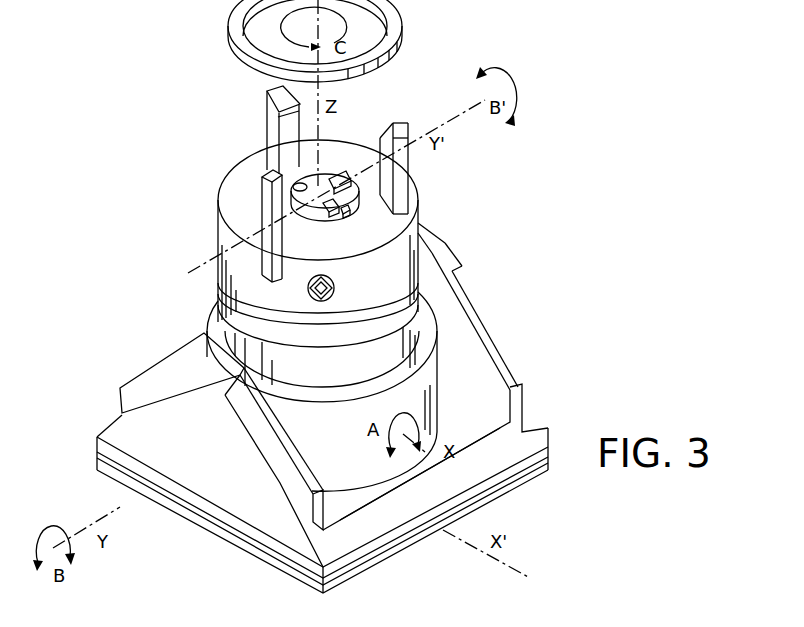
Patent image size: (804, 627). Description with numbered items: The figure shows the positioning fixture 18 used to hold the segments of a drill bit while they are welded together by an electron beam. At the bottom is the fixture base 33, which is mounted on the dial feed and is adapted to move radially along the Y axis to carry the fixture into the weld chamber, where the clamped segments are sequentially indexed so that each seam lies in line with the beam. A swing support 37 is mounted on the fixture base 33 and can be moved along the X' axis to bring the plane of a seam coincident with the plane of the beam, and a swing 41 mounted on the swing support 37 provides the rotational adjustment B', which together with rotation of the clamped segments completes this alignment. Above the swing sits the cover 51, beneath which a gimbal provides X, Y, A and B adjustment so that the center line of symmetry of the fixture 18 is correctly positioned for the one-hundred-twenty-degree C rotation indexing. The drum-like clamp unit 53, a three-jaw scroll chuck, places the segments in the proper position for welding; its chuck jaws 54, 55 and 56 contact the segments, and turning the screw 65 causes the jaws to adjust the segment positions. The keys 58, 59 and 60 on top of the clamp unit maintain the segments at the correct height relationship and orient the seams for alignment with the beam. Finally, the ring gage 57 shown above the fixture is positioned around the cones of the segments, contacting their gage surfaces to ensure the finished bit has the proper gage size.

The positioning fixture 18 is at (122, 288).
The fixture base 33 is at (243, 550).
The swing support 37 is at (130, 470).
The swing 41 is at (467, 417).
The cover 51 is at (437, 352).
The clamp unit 53 is at (220, 243).
The chuck jaw 54 is at (409, 170).
The chuck jaw 55 is at (260, 192).
The chuck jaw 56 is at (266, 97).
The ring gage 57 is at (346, 41).
The key 58 is at (362, 226).
The key 59 is at (306, 226).
The key 60 is at (347, 176).
The screw 65 is at (335, 290).